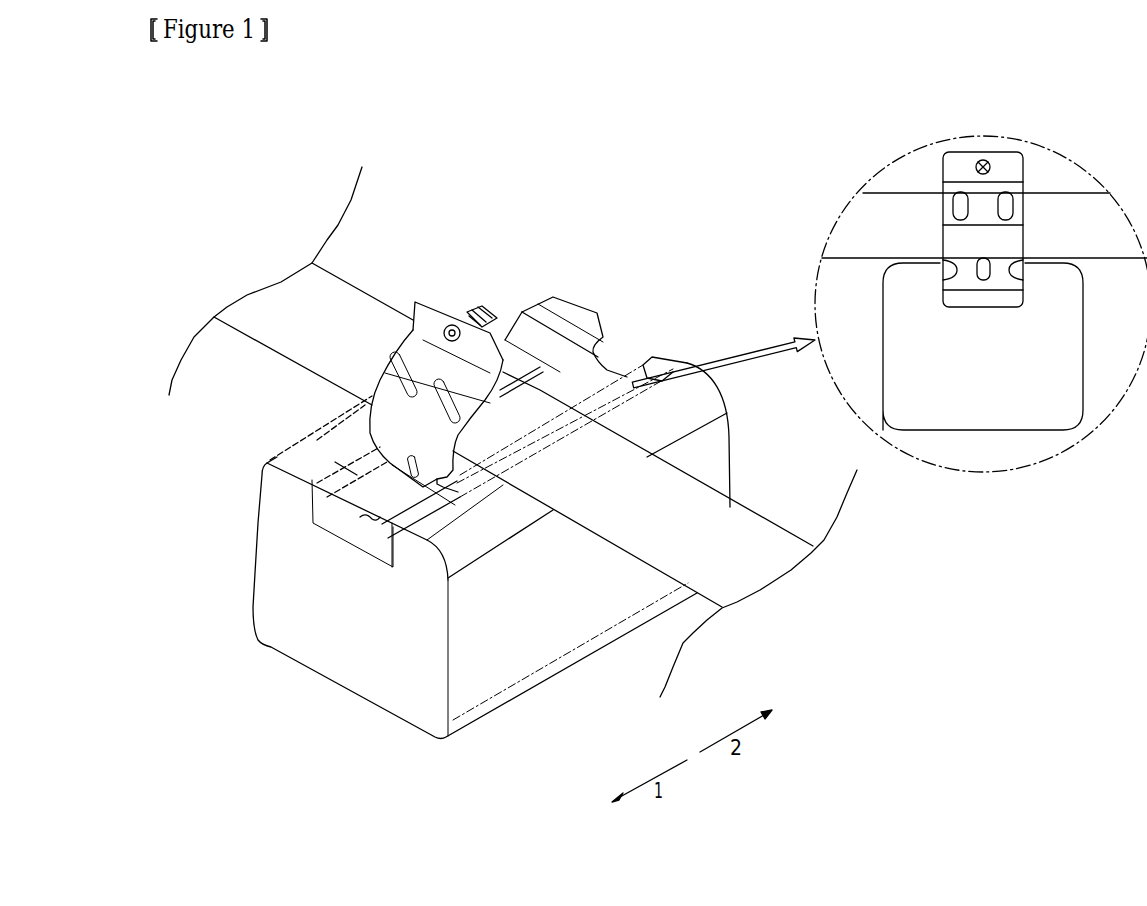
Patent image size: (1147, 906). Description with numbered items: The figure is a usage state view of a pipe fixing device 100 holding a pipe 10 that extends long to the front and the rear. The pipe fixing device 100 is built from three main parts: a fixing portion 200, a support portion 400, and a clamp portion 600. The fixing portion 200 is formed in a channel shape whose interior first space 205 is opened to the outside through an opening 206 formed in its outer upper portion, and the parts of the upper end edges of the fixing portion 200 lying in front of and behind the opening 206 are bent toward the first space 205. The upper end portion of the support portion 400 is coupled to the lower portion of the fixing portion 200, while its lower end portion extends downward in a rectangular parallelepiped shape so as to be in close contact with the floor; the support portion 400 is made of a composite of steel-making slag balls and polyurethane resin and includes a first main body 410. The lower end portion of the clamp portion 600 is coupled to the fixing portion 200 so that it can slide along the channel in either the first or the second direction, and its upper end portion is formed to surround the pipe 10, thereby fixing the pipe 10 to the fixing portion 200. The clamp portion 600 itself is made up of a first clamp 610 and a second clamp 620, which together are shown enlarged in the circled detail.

The pipe 10 is at (747, 523).
The pipe fixing device 100 is at (632, 172).
The fixing portion 200 is at (597, 313).
The first space 205 is at (359, 645).
The opening 206 is at (363, 503).
The support portion 400 is at (900, 320).
The first main body 410 is at (557, 623).
The clamp portion 600 is at (493, 232).
The first clamp 610 is at (427, 357).
The second clamp 620 is at (503, 358).